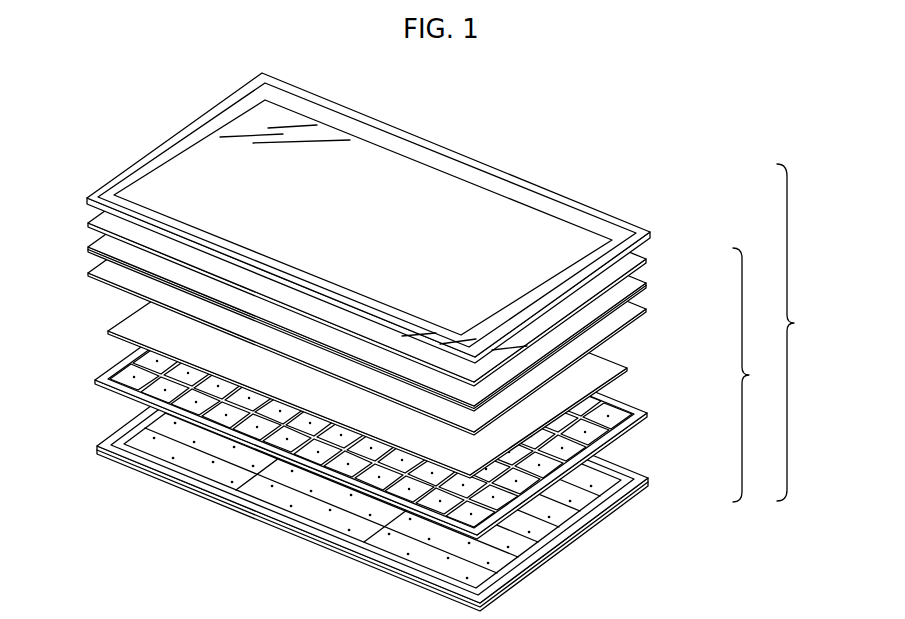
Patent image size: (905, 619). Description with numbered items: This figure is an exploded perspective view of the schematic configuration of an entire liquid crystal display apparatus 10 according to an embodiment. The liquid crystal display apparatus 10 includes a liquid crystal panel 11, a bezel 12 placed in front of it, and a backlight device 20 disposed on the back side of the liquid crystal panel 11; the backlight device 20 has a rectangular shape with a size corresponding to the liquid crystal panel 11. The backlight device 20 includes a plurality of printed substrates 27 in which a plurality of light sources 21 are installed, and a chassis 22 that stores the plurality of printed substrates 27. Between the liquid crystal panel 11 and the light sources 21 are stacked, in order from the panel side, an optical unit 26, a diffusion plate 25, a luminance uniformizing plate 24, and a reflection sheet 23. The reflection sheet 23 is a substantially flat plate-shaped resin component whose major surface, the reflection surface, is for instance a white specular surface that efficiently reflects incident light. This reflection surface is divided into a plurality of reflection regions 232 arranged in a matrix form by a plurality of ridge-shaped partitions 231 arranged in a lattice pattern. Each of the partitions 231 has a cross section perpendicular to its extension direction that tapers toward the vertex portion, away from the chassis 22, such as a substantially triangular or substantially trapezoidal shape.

The liquid crystal display apparatus 10 is at (802, 332).
The liquid crystal panel 11 is at (647, 256).
The bezel 12 is at (613, 213).
The backlight device 20 is at (756, 375).
The light sources 21 is at (408, 466).
The chassis 22 is at (632, 466).
The reflection sheet 23 is at (392, 398).
The partitions 231 is at (613, 408).
The reflection regions 232 is at (118, 397).
The luminance uniformizing plate 24 is at (630, 366).
The diffusion plate 25 is at (647, 308).
The optical unit 26 is at (647, 281).
The printed substrates 27 is at (633, 503).